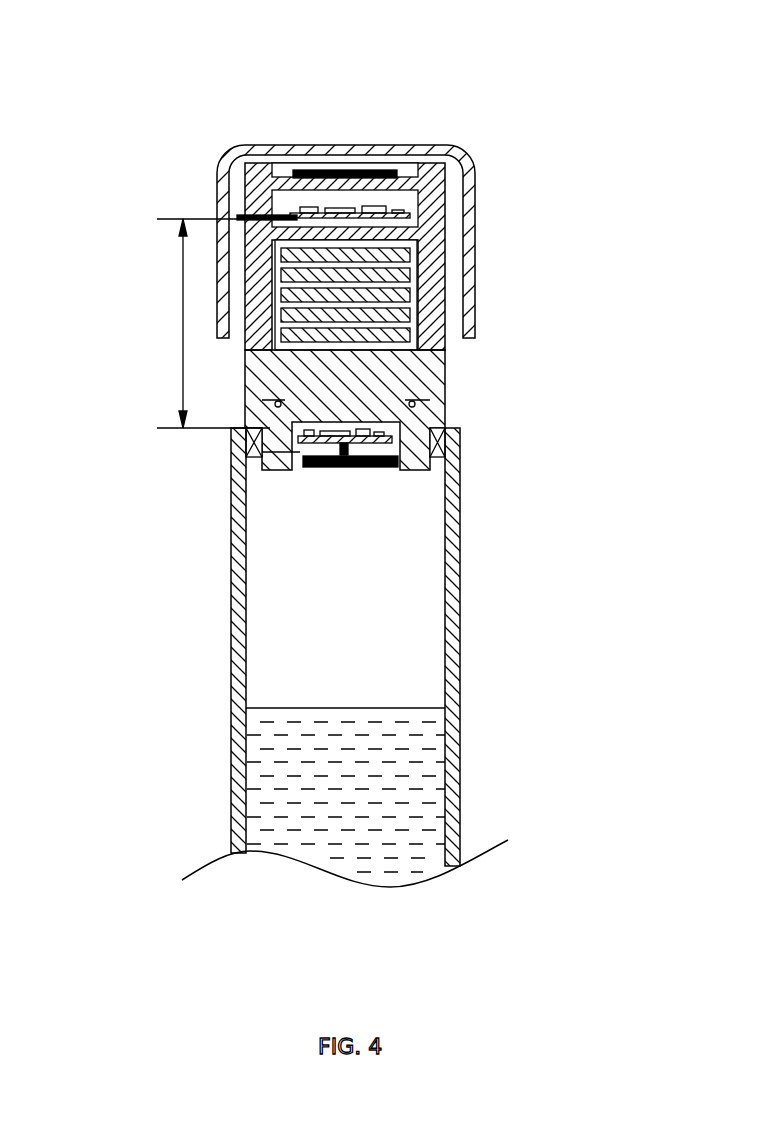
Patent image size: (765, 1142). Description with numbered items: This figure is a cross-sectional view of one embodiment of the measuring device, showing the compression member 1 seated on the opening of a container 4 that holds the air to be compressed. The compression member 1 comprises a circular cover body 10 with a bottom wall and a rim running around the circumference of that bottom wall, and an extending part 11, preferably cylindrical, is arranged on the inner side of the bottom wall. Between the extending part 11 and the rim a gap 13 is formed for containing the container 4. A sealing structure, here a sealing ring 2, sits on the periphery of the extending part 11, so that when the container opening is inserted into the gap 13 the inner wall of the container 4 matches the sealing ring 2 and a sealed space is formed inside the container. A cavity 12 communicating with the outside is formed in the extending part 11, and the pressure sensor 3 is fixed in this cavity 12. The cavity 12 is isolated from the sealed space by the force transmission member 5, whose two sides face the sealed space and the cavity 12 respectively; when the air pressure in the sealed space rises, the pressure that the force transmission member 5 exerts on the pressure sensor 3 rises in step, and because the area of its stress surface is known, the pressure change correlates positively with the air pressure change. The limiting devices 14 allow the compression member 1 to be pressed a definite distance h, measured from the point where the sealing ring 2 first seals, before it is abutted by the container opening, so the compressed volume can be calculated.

The compression member 1 is at (332, 138).
The sealing ring 2 is at (450, 452).
The pressure sensor 3 is at (410, 470).
The liquid storage tube 4 is at (460, 592).
The force transmission member 5 is at (333, 470).
The circular cover body 10 is at (467, 221).
The extending part 11 is at (438, 375).
The cavity 12 is at (262, 452).
The gap 13 is at (452, 272).
The limiting devices 14 is at (242, 218).